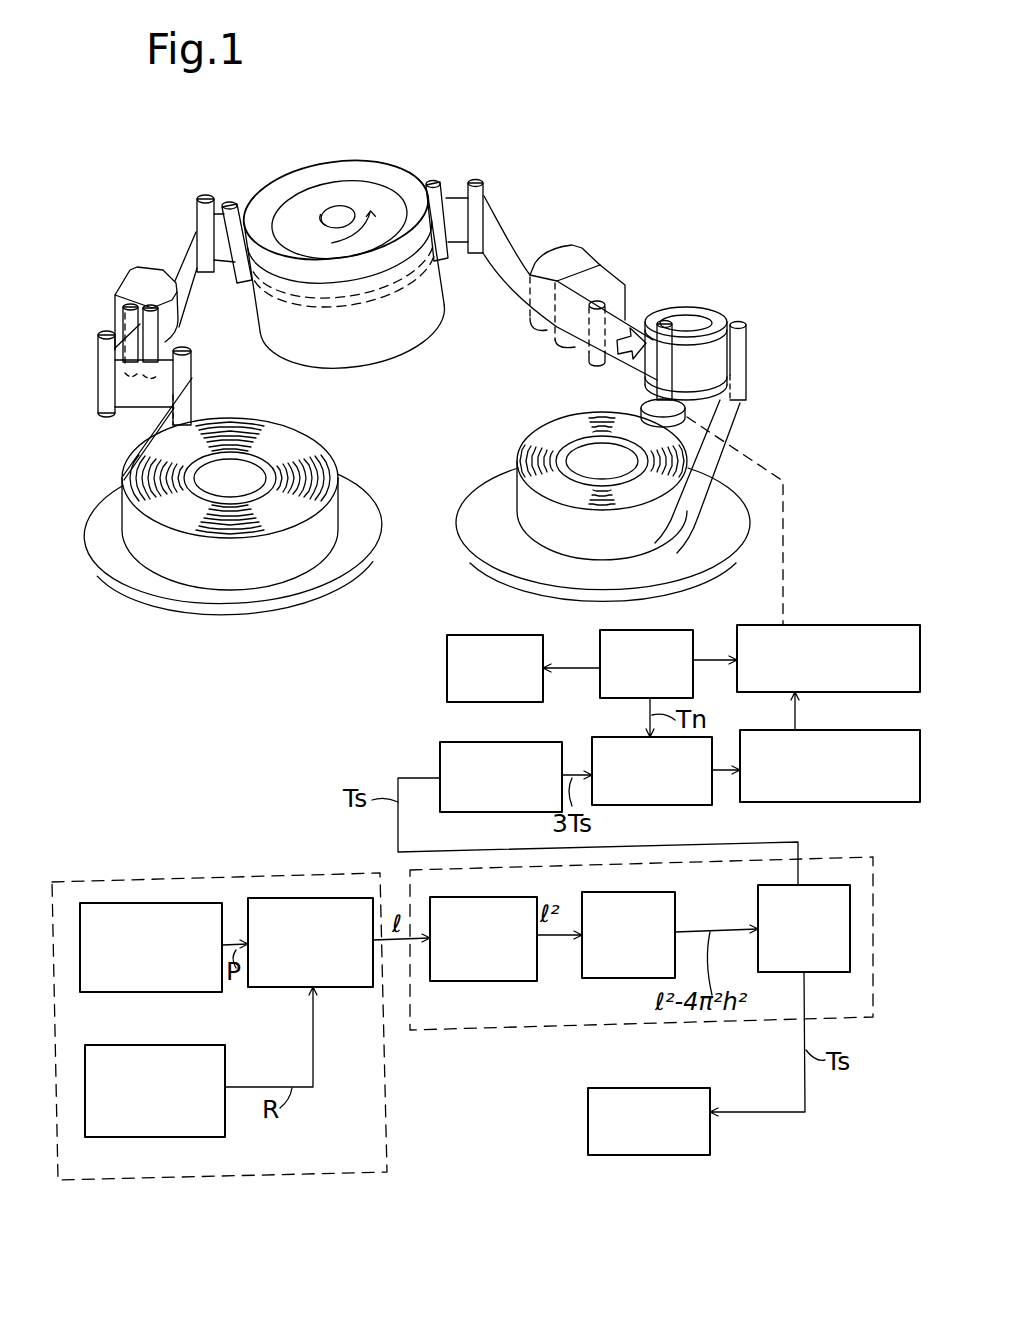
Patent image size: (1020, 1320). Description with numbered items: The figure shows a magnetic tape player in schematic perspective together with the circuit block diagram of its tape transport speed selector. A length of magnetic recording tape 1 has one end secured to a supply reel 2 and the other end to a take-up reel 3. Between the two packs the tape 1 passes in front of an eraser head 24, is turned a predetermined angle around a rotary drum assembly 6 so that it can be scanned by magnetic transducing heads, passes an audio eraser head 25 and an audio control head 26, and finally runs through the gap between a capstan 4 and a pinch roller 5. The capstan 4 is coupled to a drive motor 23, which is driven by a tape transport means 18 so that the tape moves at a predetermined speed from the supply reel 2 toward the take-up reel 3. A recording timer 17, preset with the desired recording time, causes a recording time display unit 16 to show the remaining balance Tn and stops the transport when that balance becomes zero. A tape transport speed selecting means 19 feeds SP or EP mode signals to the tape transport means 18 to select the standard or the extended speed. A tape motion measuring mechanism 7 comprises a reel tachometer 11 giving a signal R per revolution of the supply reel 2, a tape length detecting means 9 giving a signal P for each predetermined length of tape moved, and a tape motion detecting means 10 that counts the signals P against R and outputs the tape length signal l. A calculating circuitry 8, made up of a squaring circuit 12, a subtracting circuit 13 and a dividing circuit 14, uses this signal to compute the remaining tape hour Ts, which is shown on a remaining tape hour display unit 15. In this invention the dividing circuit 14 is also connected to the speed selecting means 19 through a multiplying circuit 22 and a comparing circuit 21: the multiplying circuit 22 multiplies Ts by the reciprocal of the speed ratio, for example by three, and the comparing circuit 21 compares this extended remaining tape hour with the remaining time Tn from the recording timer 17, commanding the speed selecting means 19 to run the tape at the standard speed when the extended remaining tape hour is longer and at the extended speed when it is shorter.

The magnetic recording tape 1 is at (510, 250).
The supply reel 2 is at (162, 592).
The take-up reel 3 is at (492, 547).
The capstan 4 is at (655, 381).
The pinch roller 5 is at (720, 322).
The rotary drum assembly 6 is at (310, 179).
The tape motion measuring mechanism 7 is at (232, 878).
The calculating circuitry 8 is at (497, 1027).
The tape length detecting means 9 is at (137, 992).
The tape motion detecting means 10 is at (300, 987).
The reel tachometer 11 is at (152, 1137).
The squaring circuit 12 is at (490, 982).
The subtracting circuit 13 is at (612, 978).
The dividing circuit 14 is at (812, 972).
The remaining tape hour display unit 15 is at (668, 1155).
The recording time display unit 16 is at (490, 702).
The recording timer 17 is at (628, 698).
The tape transport means 18 is at (870, 692).
The tape transport speed selecting means 19 is at (812, 802).
The comparing circuit 21 is at (645, 805).
The multiplying circuit 22 is at (502, 812).
The drive motor 23 is at (719, 408).
The eraser head 24 is at (147, 278).
The audio eraser head 25 is at (578, 253).
The audio control head 26 is at (607, 278).